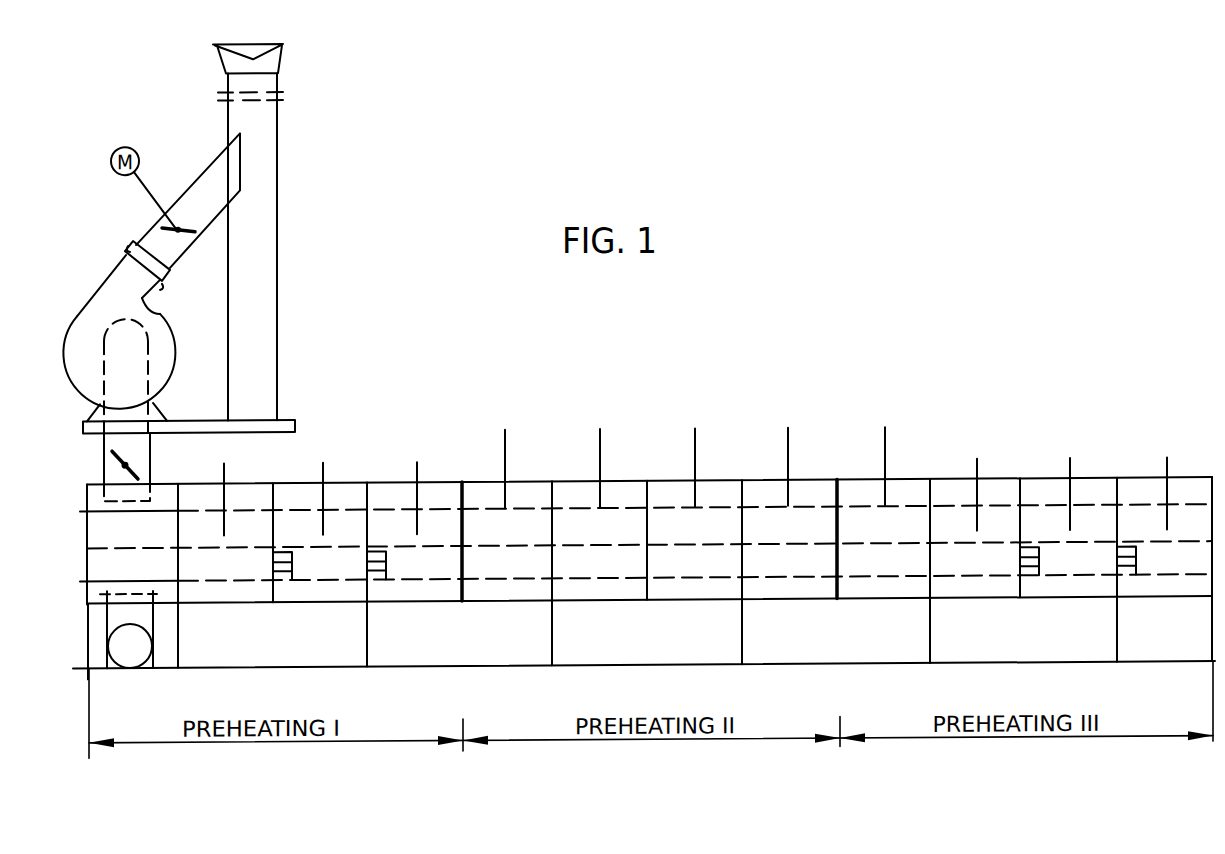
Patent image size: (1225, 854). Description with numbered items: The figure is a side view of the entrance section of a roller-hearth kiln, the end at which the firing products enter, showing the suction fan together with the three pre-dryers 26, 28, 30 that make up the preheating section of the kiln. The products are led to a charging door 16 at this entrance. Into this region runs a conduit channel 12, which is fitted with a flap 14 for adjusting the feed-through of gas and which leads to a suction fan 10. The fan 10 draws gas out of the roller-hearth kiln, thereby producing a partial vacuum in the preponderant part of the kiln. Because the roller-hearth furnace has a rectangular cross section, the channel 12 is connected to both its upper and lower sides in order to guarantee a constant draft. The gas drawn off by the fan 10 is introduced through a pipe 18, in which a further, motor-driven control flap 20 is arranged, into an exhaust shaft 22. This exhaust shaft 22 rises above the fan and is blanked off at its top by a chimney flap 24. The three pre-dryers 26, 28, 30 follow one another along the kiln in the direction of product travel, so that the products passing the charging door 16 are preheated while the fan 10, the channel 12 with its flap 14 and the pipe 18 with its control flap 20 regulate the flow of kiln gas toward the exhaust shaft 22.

The suction fan 10 is at (78, 318).
The conduit channel 12 is at (150, 451).
The flap 14 is at (121, 465).
The charging door 16 is at (87, 562).
The pipe 18 is at (219, 167).
The motor-driven control flap 20 is at (178, 227).
The exhaust shaft 22 is at (270, 288).
The chimney flap 24 is at (281, 58).
The pre-dryer 26 is at (341, 483).
The pre-dryer 28 is at (529, 483).
The pre-dryer 30 is at (910, 483).